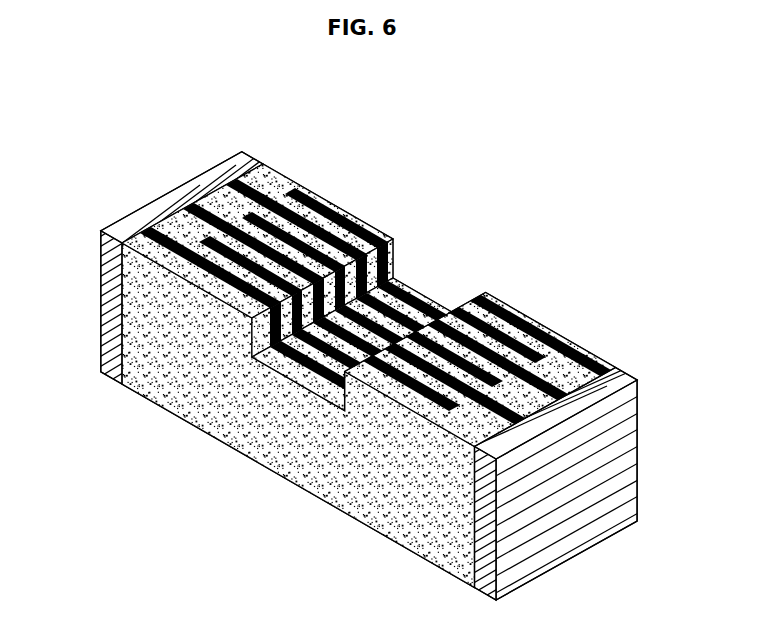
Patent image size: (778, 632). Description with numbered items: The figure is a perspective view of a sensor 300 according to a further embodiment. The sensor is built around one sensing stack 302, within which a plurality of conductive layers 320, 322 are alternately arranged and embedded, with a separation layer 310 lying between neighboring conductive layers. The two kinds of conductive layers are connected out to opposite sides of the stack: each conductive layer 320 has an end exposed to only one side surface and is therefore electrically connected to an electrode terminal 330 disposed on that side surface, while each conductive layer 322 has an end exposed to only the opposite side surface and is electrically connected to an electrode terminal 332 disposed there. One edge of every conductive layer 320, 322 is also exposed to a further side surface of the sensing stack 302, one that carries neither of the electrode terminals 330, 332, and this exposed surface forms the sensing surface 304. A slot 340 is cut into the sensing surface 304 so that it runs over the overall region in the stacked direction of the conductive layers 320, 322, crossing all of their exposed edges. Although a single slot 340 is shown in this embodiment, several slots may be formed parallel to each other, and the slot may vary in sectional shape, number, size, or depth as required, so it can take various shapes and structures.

The sensor 300 is at (146, 62).
The sensing stack 302 is at (240, 482).
The sensing surface 304 is at (408, 248).
The separation layer 310 is at (355, 218).
The conductive layer 320 is at (263, 200).
The conductive layer 322 is at (568, 345).
The electrode terminal 330 is at (101, 321).
The electrode terminal 332 is at (632, 473).
The slot 340 is at (425, 290).